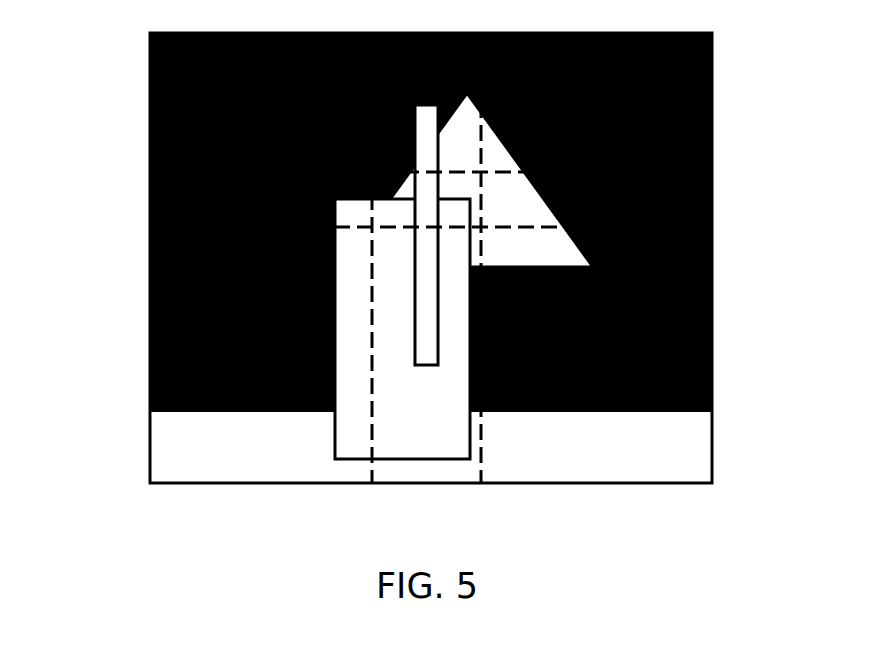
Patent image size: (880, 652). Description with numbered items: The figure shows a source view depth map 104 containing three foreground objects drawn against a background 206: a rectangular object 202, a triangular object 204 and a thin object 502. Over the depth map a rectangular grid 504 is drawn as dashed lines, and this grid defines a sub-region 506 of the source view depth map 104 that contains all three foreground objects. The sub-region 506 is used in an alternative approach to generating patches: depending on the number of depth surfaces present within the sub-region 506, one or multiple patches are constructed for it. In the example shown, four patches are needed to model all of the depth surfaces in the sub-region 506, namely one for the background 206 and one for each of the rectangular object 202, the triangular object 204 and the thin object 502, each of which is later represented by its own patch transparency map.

The source view depth map 104 is at (221, 483).
The rectangular object 202 is at (351, 459).
The triangular object 204 is at (548, 267).
The background 206 is at (675, 452).
The thin object 502 is at (427, 365).
The rectangular grid 504 is at (223, 227).
The sub-region 506 is at (512, 194).